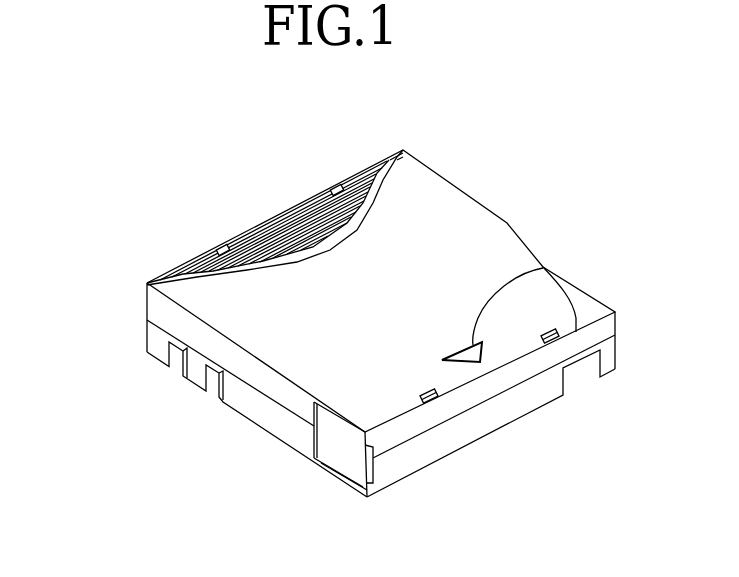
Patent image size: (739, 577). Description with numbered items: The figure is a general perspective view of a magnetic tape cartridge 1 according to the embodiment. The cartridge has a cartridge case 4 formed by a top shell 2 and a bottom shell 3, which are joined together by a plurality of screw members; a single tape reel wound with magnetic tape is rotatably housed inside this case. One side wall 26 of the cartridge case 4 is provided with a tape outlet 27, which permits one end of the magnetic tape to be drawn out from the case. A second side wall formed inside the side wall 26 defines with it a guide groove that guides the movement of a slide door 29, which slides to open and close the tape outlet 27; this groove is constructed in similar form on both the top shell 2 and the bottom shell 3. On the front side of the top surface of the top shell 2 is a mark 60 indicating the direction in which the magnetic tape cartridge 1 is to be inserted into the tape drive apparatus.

The magnetic tape cartridge 1 is at (190, 178).
The top shell 2 is at (153, 300).
The bottom shell 3 is at (152, 339).
The cartridge case 4 is at (58, 272).
The side wall 26 is at (290, 424).
The tape outlet 27 is at (333, 458).
The slide door 29 is at (347, 445).
The mark 60 is at (543, 268).